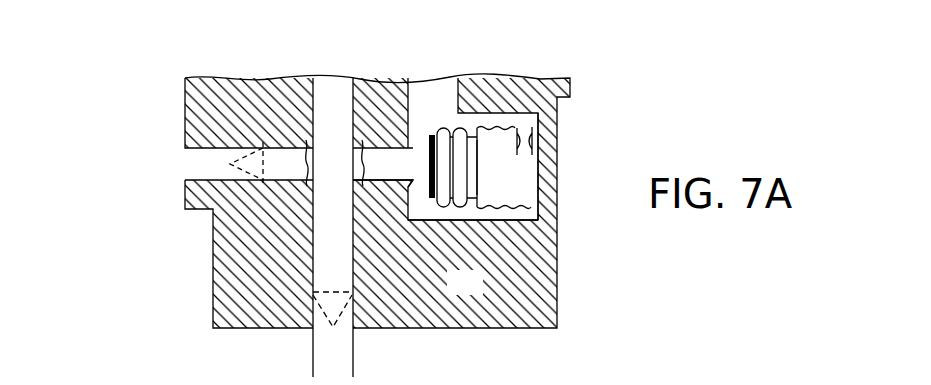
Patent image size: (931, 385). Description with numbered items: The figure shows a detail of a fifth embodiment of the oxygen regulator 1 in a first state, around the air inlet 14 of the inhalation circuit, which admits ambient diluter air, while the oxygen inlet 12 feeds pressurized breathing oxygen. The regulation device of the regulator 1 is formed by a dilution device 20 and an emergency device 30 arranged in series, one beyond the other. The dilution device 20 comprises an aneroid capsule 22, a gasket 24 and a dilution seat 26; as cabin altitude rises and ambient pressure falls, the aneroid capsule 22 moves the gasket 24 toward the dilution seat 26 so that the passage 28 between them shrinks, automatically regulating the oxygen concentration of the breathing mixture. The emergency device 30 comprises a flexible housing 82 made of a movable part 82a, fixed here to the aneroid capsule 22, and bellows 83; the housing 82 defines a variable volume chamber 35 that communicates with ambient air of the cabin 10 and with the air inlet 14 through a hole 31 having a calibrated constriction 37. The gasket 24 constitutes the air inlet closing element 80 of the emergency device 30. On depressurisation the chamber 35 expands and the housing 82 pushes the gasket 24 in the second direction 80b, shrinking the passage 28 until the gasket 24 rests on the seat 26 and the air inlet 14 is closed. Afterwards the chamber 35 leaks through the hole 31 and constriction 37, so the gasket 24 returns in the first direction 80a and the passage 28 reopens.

The regulator 1 is at (157, 295).
The cabin 10 is at (50, 211).
The oxygen inlet 12 is at (323, 353).
The air inlet 14 is at (197, 167).
The dilution device 20 is at (450, 110).
The aneroid capsule 22 is at (453, 206).
The gasket 24 is at (430, 170).
The dilution seat 26 is at (407, 184).
The passage 28 is at (420, 192).
The emergency device 30 is at (557, 310).
The hole 31 is at (523, 123).
The variable volume chamber 35 is at (517, 187).
The calibrated constriction 37 is at (528, 142).
The air inlet closing element 80 is at (428, 117).
The first direction 80a is at (563, 363).
The second direction 80b is at (502, 363).
The flexible housing 82 is at (508, 232).
The movable part 82a is at (477, 168).
The bellows 83 is at (517, 222).